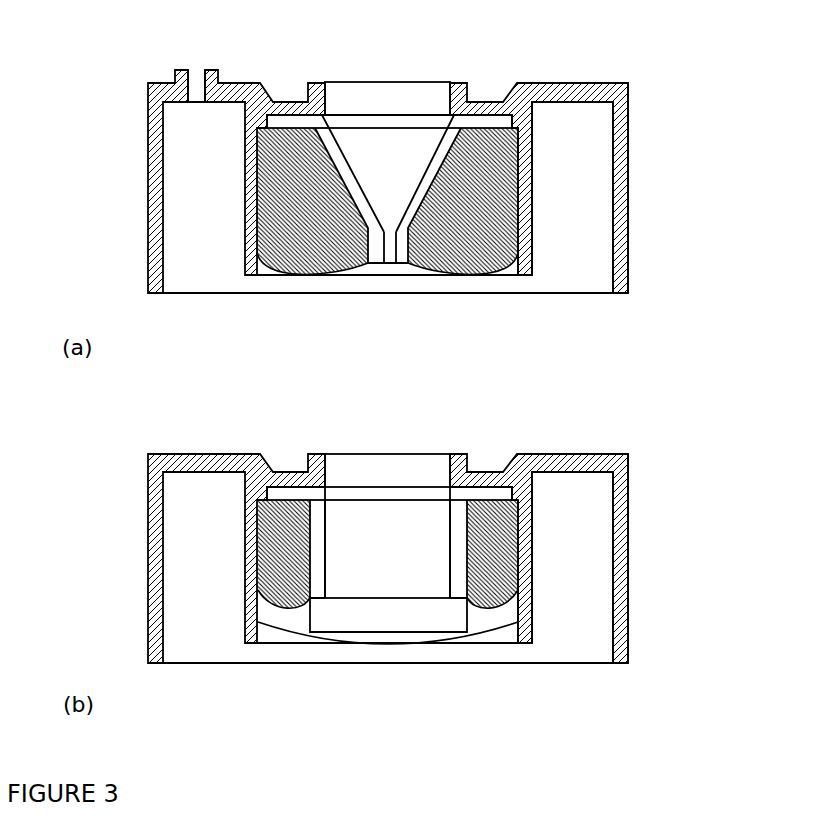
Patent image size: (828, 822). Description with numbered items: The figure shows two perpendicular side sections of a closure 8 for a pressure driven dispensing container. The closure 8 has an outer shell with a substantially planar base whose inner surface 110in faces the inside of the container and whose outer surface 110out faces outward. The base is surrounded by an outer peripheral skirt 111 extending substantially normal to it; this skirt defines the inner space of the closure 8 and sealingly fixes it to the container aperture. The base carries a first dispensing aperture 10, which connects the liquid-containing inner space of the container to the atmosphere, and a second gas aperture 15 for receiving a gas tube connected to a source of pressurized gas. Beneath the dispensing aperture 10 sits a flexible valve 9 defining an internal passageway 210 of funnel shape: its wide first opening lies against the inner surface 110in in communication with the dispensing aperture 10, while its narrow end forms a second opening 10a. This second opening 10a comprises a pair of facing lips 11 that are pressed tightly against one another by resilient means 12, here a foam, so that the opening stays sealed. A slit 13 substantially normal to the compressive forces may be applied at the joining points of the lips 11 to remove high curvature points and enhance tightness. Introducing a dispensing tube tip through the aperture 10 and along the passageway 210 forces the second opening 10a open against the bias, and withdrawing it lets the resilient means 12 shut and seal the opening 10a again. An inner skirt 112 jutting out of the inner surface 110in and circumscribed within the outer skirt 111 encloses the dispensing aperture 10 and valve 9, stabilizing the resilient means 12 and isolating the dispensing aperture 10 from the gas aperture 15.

The closure 8 is at (658, 224).
The flexible valve 9 is at (327, 130).
The first dispensing aperture 10 is at (432, 98).
The second opening 10a is at (398, 240).
The lips 11 is at (388, 240).
The resilient means 12 is at (467, 273).
The slit 13 is at (367, 258).
The second gas aperture 15 is at (197, 93).
The outer surface 110out is at (527, 82).
The inner surface 110in is at (563, 103).
The outer peripheral skirt 111 is at (627, 262).
The inner skirt 112 is at (533, 262).
The internal passageway 210 is at (384, 160).